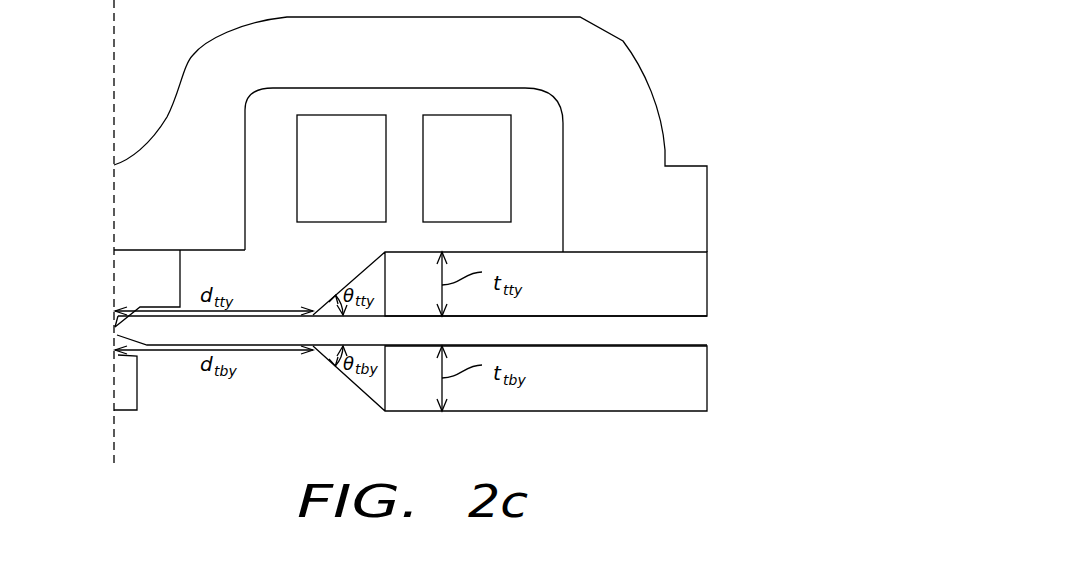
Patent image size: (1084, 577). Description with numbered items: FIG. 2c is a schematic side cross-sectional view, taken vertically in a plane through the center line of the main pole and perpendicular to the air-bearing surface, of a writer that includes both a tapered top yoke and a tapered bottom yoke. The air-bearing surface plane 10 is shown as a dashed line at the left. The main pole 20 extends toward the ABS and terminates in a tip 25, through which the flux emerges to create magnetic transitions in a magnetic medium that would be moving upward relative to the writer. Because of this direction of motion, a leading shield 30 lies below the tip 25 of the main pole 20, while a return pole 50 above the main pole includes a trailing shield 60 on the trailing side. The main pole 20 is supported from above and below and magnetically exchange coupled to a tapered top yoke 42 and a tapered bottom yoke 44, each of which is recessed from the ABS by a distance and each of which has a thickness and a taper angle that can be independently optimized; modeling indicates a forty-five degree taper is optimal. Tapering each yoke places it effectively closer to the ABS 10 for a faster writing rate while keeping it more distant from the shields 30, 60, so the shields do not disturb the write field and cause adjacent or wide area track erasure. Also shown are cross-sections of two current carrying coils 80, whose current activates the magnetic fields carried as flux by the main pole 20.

The air-bearing surface plane 10 is at (114, 83).
The main pole 20 is at (695, 337).
The tip 25 is at (115, 334).
The leading shield 30 is at (120, 386).
The tapered top yoke 42 is at (695, 290).
The tapered bottom yoke 44 is at (695, 384).
The return pole 50 is at (647, 124).
The trailing shield 60 is at (120, 288).
The current carrying coils 80 is at (425, 224).